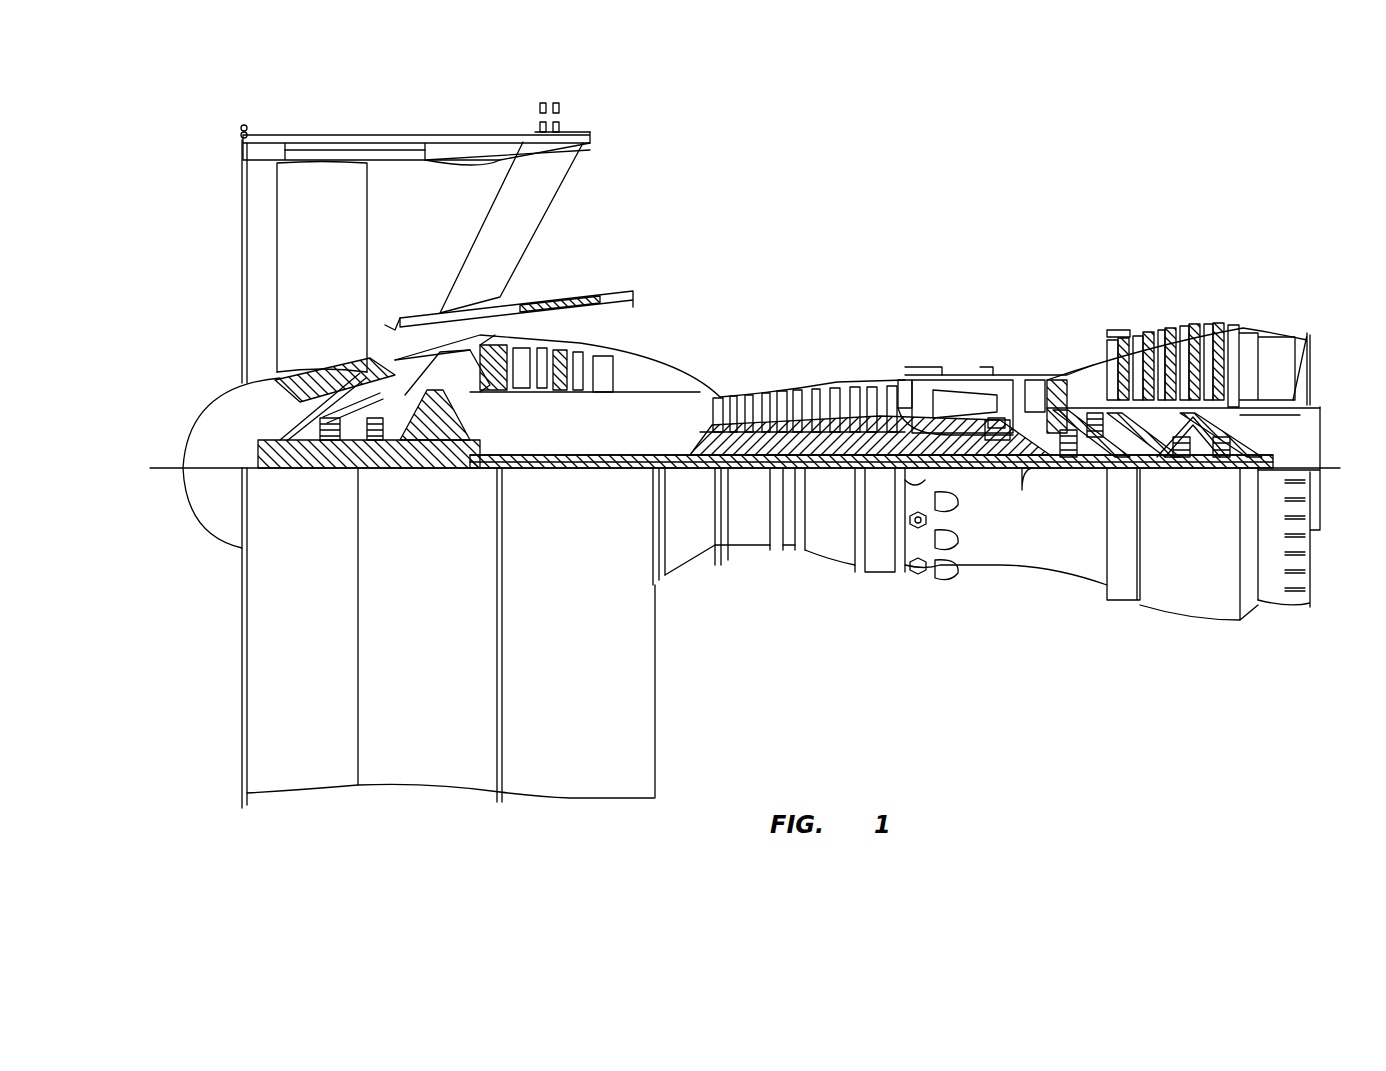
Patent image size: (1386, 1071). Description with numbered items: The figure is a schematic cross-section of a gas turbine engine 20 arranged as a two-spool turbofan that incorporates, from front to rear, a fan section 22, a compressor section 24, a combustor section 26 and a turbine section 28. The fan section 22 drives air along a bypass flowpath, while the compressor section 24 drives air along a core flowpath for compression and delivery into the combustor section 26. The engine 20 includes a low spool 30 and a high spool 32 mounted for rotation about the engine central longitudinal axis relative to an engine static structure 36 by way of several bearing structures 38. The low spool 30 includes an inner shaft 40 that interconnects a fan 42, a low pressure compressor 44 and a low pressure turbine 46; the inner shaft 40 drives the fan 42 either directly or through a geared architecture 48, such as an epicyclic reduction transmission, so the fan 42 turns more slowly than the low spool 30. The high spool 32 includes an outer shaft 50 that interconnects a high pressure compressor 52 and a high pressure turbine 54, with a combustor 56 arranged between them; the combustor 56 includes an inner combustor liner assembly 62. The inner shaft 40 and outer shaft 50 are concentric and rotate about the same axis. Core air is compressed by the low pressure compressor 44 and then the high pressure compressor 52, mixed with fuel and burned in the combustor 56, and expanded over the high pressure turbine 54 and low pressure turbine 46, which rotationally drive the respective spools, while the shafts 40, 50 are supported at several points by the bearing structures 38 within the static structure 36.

The gas turbine engine 20 is at (1088, 182).
The fan section 22 is at (495, 108).
The compressor section 24 is at (507, 252).
The combustor section 26 is at (1018, 252).
The turbine section 28 is at (1250, 252).
The low spool 30 is at (836, 483).
The high spool 32 is at (865, 395).
The engine static structure 36 is at (884, 588).
The bearing structures 38 is at (528, 525).
The inner shaft 40 is at (680, 470).
The fan 42 is at (326, 282).
The low pressure compressor 44 is at (580, 353).
The low pressure turbine 46 is at (1175, 330).
The geared architecture 48 is at (445, 440).
The outer shaft 50 is at (975, 455).
The high pressure compressor 52 is at (805, 397).
The high pressure turbine 54 is at (1033, 375).
The combustor 56 is at (962, 390).
The inner combustor liner assembly 62 is at (740, 470).